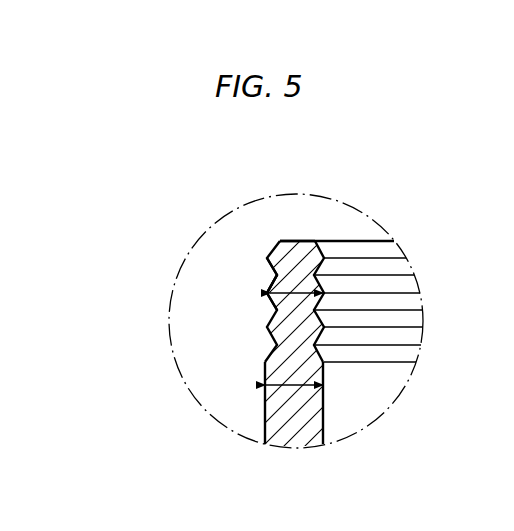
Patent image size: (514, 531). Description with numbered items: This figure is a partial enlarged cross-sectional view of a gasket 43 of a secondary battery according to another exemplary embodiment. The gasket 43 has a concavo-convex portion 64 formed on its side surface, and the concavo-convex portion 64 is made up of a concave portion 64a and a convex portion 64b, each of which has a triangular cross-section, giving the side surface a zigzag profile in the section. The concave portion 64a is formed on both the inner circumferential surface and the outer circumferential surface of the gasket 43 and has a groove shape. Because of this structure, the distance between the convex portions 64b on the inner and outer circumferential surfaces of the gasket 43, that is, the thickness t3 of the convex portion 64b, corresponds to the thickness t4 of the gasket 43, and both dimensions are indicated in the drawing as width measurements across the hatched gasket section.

The concavo-convex portion 64 is at (95, 268).
The concave portion 64a is at (277, 275).
The convex portion 64b is at (270, 293).
The gasket 43 is at (278, 420).
The thickness of the convex portion t3 is at (293, 292).
The thickness of the gasket t4 is at (322, 368).